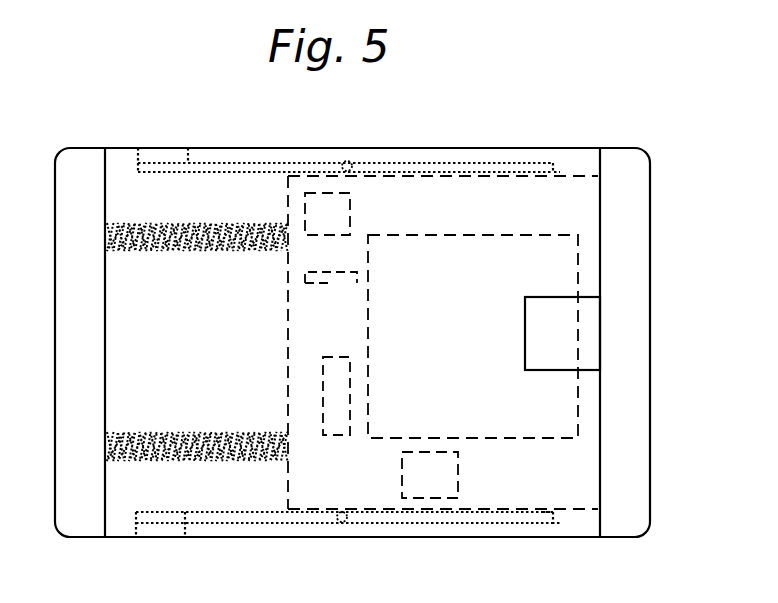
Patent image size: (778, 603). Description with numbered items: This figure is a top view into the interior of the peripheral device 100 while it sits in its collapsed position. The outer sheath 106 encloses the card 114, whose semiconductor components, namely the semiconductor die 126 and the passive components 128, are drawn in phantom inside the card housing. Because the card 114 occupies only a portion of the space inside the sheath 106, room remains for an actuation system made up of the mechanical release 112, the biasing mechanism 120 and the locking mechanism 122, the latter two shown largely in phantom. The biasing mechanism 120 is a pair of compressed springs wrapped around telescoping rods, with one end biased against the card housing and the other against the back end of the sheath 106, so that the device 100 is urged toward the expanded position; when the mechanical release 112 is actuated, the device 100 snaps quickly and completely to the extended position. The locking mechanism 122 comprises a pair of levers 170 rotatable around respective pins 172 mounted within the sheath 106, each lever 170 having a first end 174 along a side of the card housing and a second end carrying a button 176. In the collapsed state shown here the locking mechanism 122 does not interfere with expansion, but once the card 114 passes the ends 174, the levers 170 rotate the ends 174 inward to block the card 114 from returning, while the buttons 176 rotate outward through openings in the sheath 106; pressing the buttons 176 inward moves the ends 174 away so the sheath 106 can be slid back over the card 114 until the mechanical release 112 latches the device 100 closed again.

The peripheral device 100 is at (661, 123).
The sheath 106 is at (120, 160).
The mechanical release 112 is at (530, 327).
The card 114 is at (298, 315).
The biasing mechanism 120 is at (163, 255).
The locking mechanism 122 is at (283, 156).
The semiconductor die 126 is at (473, 336).
The passive components 128 is at (338, 283).
The levers 170 is at (436, 162).
The pins 172 is at (348, 162).
The first end 174 is at (545, 162).
The button 176 is at (165, 155).